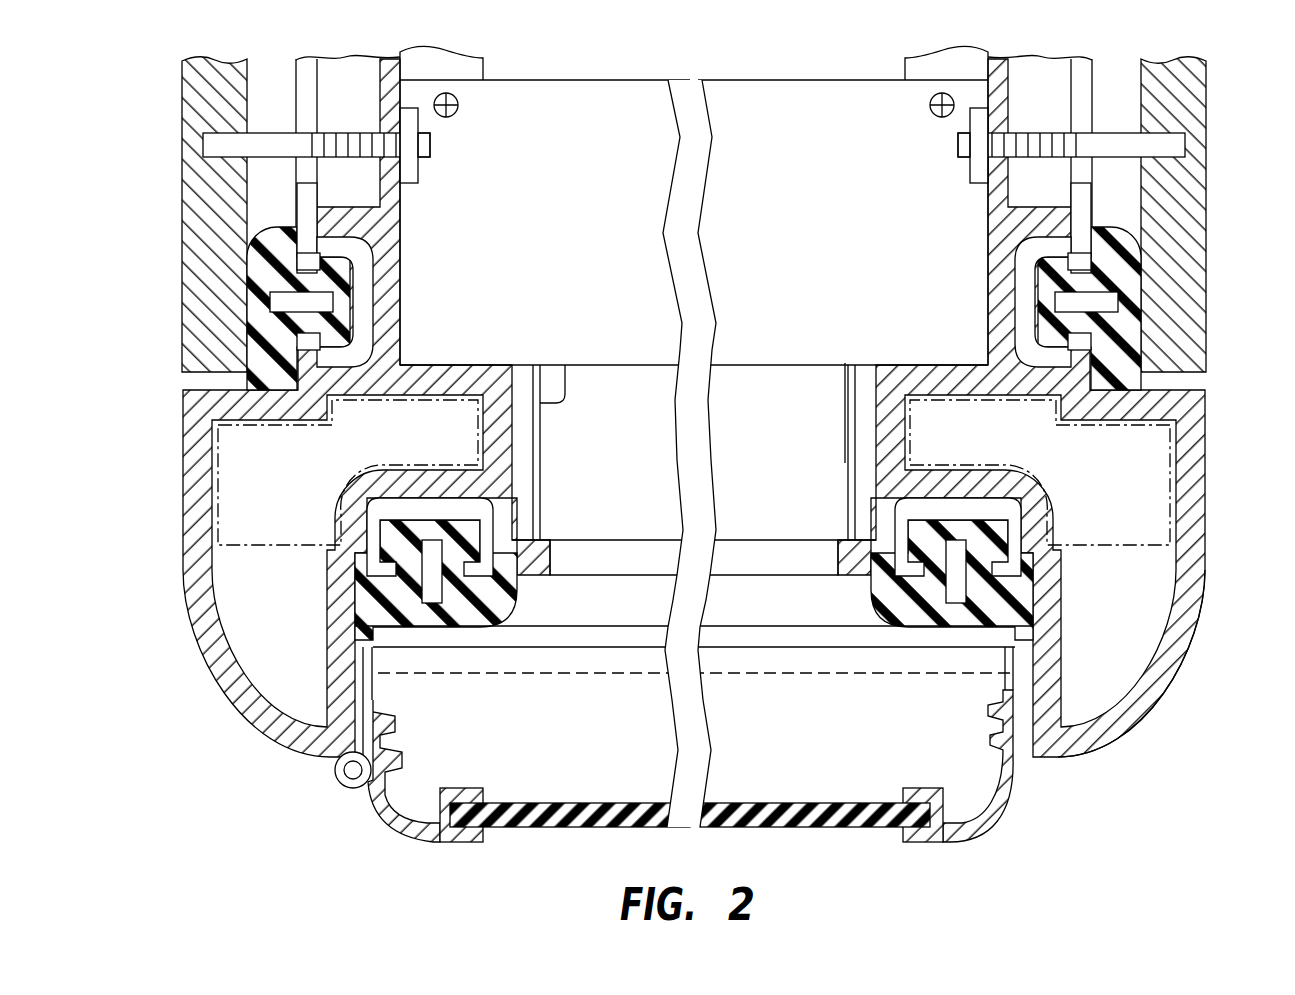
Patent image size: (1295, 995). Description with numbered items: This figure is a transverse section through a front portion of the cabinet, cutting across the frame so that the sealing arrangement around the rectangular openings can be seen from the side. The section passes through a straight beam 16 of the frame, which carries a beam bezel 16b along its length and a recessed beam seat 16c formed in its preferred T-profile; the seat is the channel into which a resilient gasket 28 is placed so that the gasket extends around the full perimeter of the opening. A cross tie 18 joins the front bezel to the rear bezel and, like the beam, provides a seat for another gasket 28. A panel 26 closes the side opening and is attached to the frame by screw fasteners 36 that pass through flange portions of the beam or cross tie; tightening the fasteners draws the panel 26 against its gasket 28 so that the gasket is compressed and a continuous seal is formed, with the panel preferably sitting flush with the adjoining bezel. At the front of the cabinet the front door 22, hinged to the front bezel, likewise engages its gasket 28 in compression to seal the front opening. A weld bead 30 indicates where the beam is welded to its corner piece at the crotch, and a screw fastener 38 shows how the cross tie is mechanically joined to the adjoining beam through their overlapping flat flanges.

The beam 16 is at (182, 470).
The beam bezel 16b is at (1110, 732).
The beam seat 16c is at (1012, 300).
The cross tie 18 is at (483, 62).
The front door 22 is at (532, 827).
The panel 26 is at (181, 305).
The resilient gasket 28 is at (287, 210).
The weld bead 30 is at (566, 363).
The screw fastener 36 is at (430, 146).
The screw fastener 38 is at (932, 113).